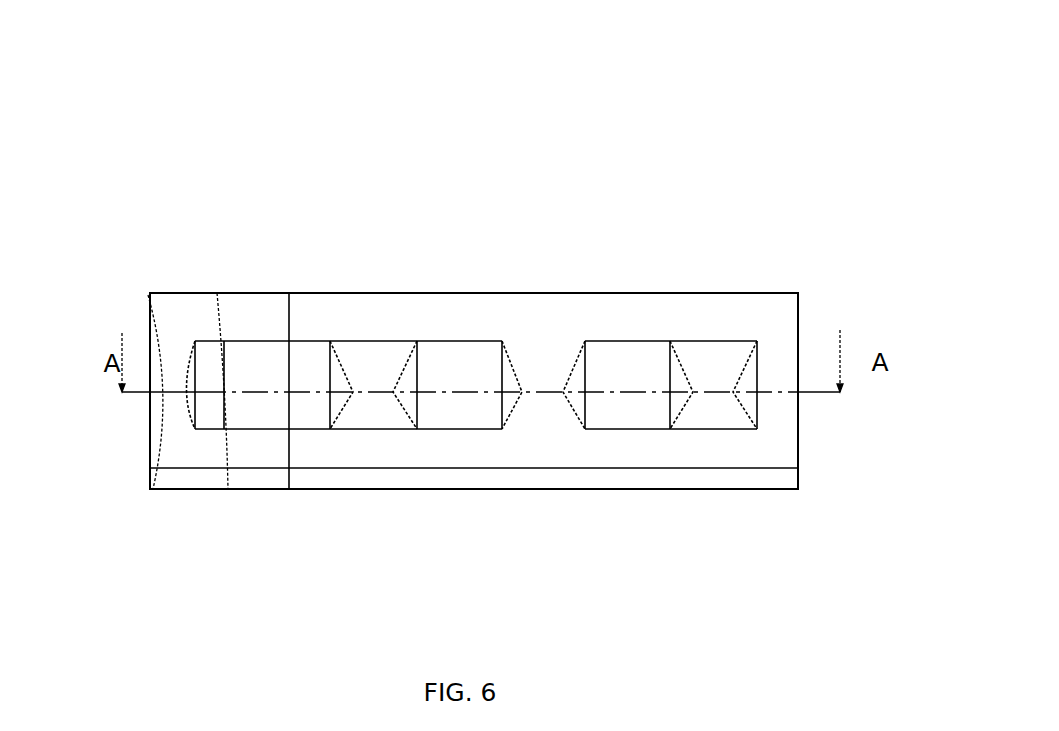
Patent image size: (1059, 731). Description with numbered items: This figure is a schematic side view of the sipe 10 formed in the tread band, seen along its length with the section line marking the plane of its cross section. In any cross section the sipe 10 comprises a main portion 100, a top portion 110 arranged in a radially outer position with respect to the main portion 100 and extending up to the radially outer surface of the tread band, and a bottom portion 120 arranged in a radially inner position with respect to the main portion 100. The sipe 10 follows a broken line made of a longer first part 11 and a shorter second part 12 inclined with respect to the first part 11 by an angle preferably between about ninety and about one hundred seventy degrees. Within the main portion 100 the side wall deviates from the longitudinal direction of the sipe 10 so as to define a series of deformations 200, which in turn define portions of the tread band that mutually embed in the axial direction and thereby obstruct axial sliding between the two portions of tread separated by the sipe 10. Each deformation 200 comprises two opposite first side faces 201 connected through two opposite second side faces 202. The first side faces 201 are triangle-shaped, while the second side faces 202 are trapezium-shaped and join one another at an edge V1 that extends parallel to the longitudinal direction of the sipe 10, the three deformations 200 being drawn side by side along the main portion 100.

The sipe 10 is at (578, 97).
The first part 11 is at (622, 498).
The second part 12 is at (268, 497).
The main portion 100 is at (177, 383).
The top portion 110 is at (203, 316).
The bottom portion 120 is at (193, 453).
The deformation 200 is at (378, 355).
The first side face 201 is at (338, 372).
The second side face 202 is at (363, 363).
The edge V1 is at (380, 392).